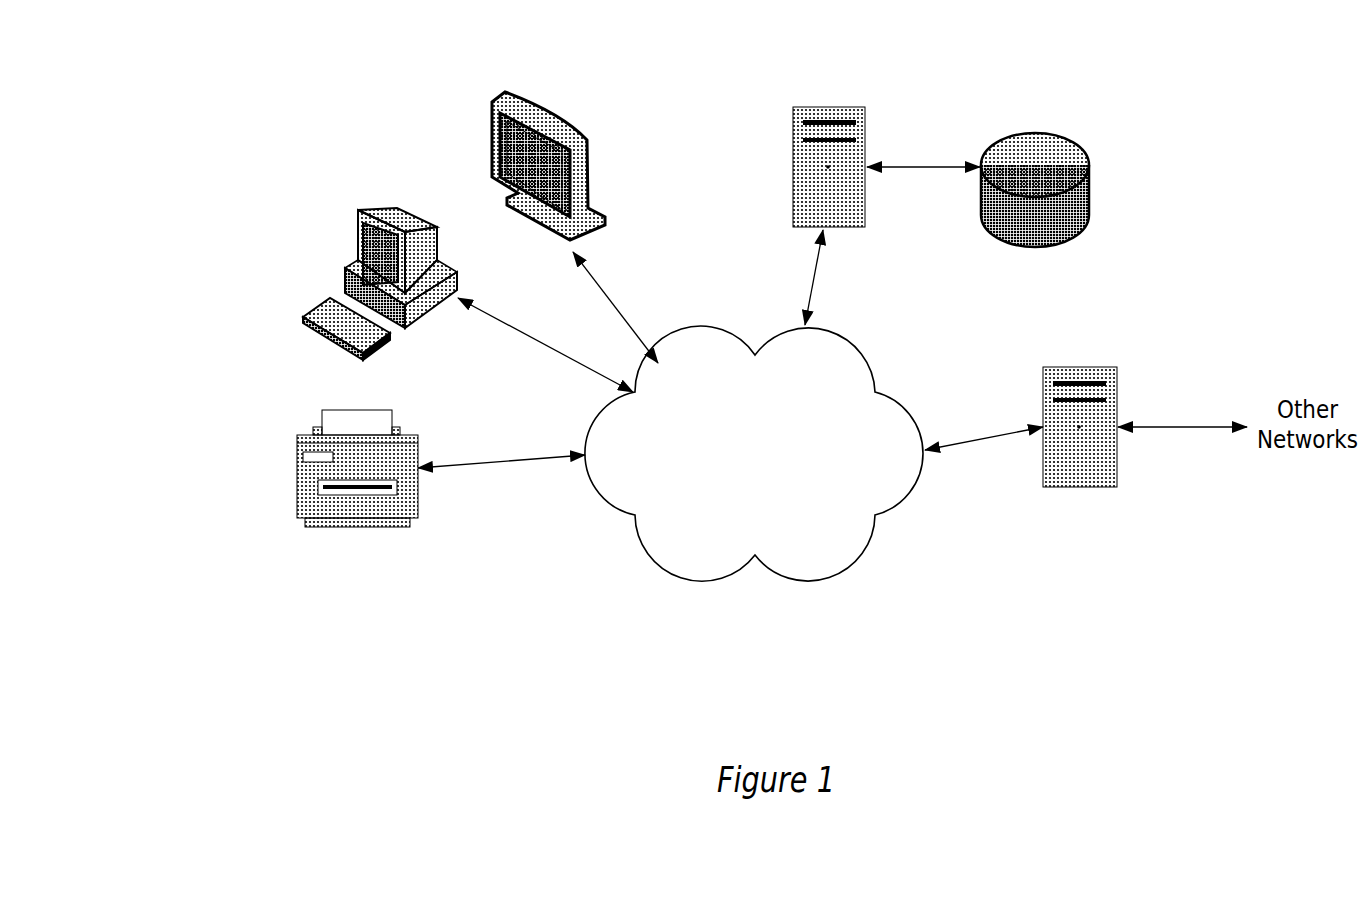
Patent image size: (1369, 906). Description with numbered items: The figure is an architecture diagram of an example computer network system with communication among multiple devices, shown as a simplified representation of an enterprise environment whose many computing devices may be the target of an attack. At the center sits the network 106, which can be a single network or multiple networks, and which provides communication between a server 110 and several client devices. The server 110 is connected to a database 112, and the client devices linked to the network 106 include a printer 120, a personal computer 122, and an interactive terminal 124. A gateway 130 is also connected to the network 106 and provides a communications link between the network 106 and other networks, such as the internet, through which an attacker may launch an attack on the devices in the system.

The network 106 is at (754, 453).
The server 110 is at (827, 107).
The database 112 is at (1065, 135).
The printer 120 is at (295, 468).
The personal computer 122 is at (380, 208).
The interactive terminal 124 is at (590, 138).
The gateway 130 is at (1080, 367).